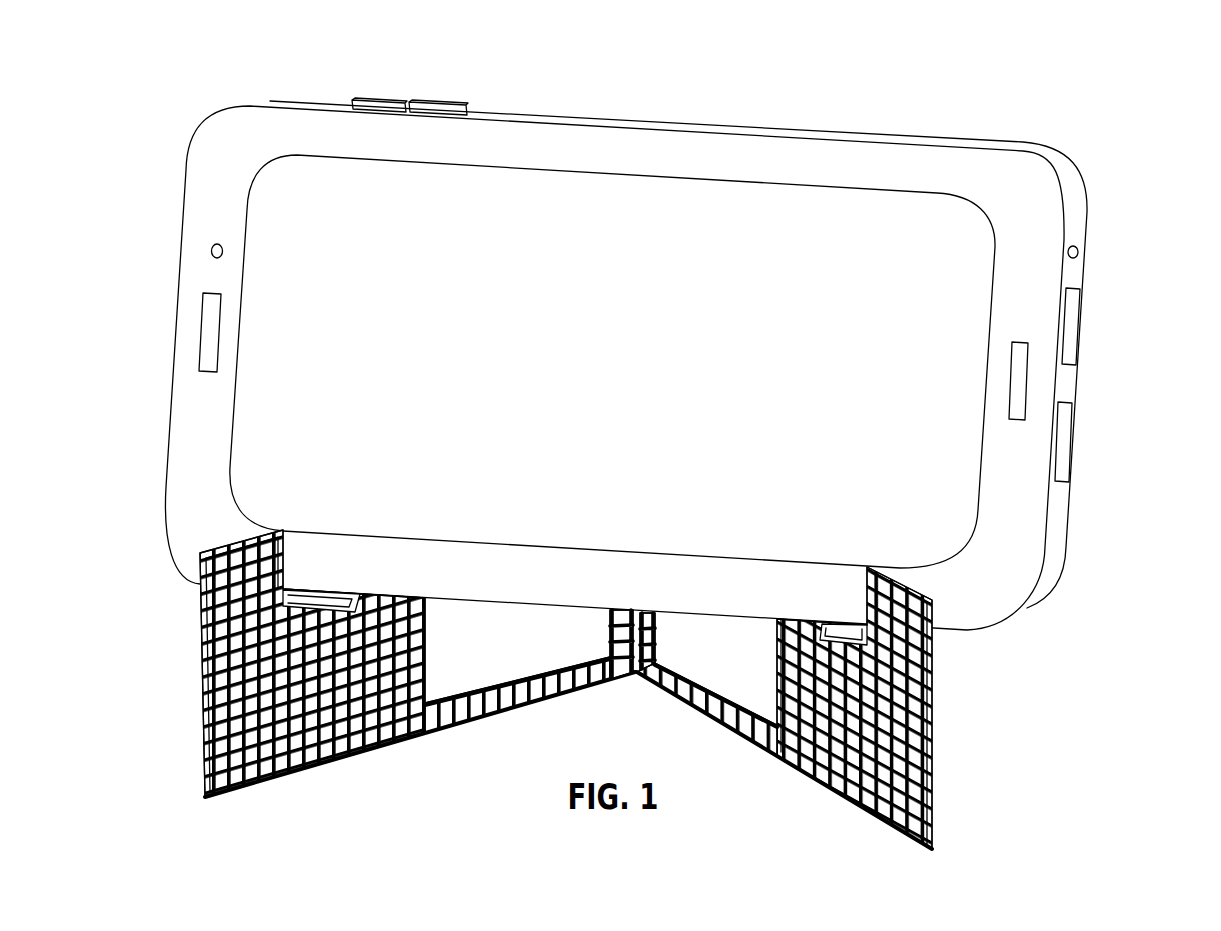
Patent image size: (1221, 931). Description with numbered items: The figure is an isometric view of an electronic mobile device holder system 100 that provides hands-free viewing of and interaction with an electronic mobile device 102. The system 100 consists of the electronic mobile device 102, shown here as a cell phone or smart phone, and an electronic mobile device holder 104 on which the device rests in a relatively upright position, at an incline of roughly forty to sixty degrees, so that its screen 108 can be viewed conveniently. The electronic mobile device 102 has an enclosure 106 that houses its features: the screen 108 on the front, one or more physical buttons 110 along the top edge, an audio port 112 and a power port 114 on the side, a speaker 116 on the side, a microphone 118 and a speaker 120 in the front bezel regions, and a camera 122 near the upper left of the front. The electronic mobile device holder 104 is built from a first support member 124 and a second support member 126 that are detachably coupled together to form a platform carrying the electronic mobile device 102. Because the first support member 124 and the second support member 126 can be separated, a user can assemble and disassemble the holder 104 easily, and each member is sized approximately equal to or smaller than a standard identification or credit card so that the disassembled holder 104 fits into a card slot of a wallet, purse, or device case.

The electronic mobile device holder system 100 is at (634, 60).
The electronic mobile device 102 is at (1098, 193).
The electronic mobile device holder 104 is at (960, 740).
The enclosure 106 is at (752, 128).
The screen 108 is at (603, 273).
The physical buttons 110 is at (385, 108).
The audio port 112 is at (1080, 252).
The power port 114 is at (1068, 345).
The speaker 116 is at (1060, 447).
The microphone 118 is at (1018, 385).
The speaker 120 is at (218, 340).
The camera 122 is at (223, 250).
The first support member 124 is at (318, 753).
The second support member 126 is at (793, 767).